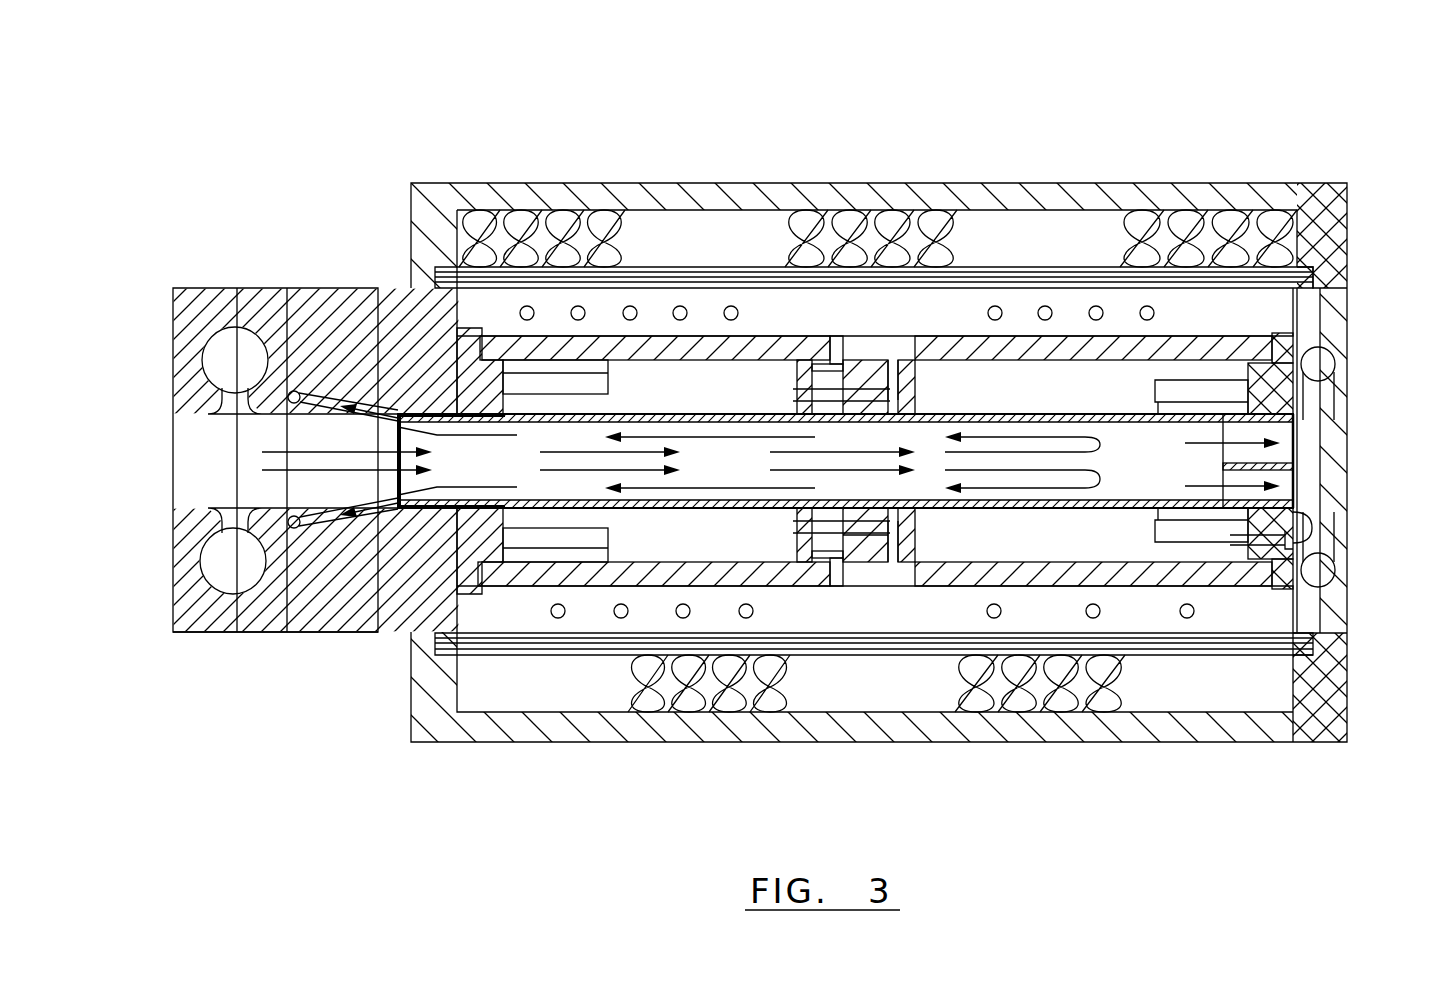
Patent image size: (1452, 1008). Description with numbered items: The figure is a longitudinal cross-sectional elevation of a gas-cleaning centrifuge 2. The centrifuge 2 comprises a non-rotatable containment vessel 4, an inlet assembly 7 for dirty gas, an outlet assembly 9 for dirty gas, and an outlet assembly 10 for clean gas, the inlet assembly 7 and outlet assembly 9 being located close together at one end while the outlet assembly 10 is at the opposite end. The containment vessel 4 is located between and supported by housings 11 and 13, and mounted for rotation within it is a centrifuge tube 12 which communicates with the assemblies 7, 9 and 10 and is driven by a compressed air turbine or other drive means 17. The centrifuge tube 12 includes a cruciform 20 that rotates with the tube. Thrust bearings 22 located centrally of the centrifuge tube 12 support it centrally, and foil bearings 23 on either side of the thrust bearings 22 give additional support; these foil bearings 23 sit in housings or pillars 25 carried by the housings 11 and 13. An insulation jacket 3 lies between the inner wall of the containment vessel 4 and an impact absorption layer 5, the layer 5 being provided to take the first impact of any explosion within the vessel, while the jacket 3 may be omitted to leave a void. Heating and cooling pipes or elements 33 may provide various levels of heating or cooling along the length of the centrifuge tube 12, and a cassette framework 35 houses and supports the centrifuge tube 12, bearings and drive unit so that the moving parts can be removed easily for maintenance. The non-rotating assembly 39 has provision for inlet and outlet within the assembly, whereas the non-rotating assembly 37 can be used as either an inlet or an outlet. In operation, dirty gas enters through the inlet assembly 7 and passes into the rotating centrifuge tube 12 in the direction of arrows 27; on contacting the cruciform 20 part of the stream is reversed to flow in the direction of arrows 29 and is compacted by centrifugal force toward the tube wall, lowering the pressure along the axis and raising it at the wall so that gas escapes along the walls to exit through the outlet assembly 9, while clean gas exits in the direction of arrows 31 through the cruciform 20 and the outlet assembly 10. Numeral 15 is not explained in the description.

The centrifuge 2 is at (1228, 412).
The insulation jacket 3 is at (1220, 345).
The non-rotatable containment vessel 4 is at (1148, 317).
The impact absorption layer 5 is at (1327, 235).
The inlet assembly 7 is at (228, 352).
The outlet assembly for dirty gas 9 is at (292, 390).
The outlet assembly for clean gas 10 is at (1310, 443).
The housing 11 is at (543, 372).
The centrifuge tube 12 is at (745, 410).
The housing 13 is at (1340, 635).
The perforated plate 15 is at (833, 310).
The compressed air turbine 17 is at (903, 563).
The cruciform 20 is at (1290, 466).
The thrust bearings 22 is at (895, 390).
The foil bearings 23 is at (1220, 392).
The housings (pillars) 25 is at (577, 372).
The arrows 27 is at (810, 450).
The arrows 29 is at (445, 416).
The arrows 31 is at (1303, 408).
The heating and cooling pipes 33 is at (993, 303).
The cassette framework 35 is at (1347, 293).
The non-rotating assembly 37 is at (1322, 572).
The non-rotating assembly 39 is at (200, 635).